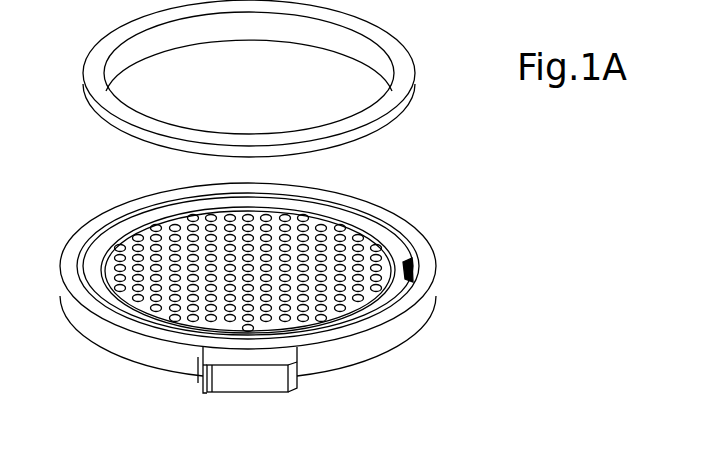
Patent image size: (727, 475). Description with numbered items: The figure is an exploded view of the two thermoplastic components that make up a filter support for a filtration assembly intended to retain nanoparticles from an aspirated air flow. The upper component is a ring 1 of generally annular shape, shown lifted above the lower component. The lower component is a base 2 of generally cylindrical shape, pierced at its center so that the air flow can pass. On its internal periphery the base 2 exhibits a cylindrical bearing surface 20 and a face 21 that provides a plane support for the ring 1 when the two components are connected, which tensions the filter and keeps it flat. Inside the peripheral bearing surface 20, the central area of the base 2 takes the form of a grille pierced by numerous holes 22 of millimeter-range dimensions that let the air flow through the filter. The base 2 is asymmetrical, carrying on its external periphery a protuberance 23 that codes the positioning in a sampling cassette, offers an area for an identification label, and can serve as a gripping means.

The ring 1 is at (96, 68).
The base 2 is at (118, 339).
The cylindrical bearing surface 20 is at (367, 243).
The face 21 is at (406, 277).
The holes 22 is at (157, 257).
The protuberance 23 is at (243, 382).